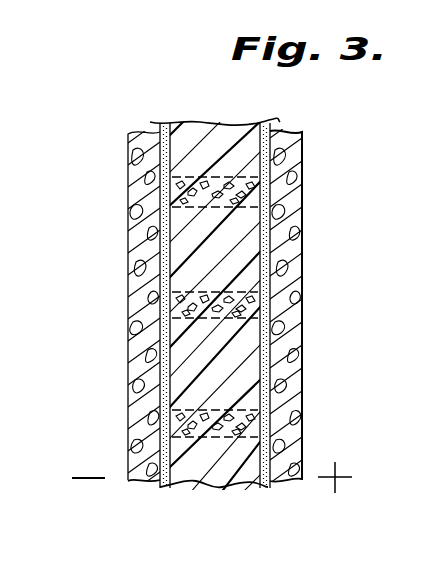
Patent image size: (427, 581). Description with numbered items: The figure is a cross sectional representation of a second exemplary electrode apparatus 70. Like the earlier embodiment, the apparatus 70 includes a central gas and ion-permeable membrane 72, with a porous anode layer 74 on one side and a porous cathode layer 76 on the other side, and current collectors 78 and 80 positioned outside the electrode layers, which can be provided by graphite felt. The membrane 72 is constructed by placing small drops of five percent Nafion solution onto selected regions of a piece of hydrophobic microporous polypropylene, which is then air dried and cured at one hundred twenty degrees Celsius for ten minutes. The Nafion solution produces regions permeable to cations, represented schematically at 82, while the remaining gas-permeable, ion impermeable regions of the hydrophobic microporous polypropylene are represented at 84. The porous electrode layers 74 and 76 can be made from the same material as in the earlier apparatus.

The electrode apparatus 70 is at (116, 136).
The central gas and ion-permeable membrane 72 is at (219, 465).
The porous anode layer 74 is at (150, 122).
The porous cathode layer 76 is at (280, 122).
The current collector 78 is at (132, 419).
The current collector 80 is at (292, 426).
The cation-permeable regions 82 is at (176, 300).
The gas-permeable, ion impermeable regions 84 is at (238, 229).